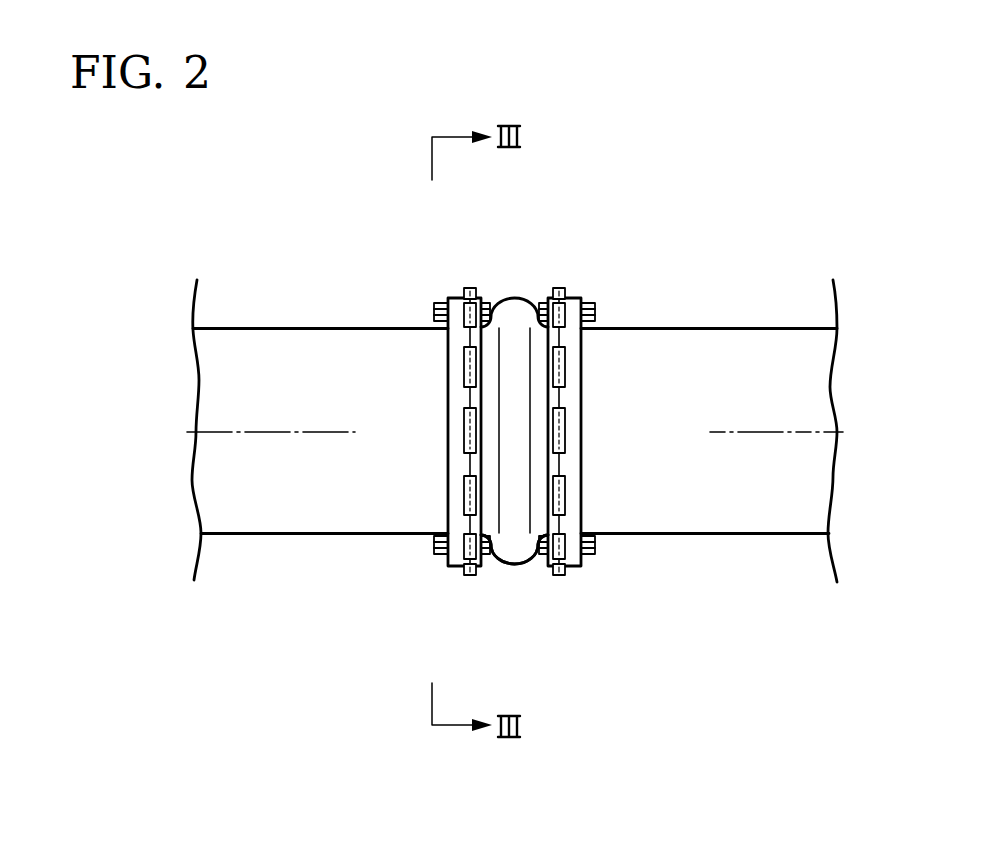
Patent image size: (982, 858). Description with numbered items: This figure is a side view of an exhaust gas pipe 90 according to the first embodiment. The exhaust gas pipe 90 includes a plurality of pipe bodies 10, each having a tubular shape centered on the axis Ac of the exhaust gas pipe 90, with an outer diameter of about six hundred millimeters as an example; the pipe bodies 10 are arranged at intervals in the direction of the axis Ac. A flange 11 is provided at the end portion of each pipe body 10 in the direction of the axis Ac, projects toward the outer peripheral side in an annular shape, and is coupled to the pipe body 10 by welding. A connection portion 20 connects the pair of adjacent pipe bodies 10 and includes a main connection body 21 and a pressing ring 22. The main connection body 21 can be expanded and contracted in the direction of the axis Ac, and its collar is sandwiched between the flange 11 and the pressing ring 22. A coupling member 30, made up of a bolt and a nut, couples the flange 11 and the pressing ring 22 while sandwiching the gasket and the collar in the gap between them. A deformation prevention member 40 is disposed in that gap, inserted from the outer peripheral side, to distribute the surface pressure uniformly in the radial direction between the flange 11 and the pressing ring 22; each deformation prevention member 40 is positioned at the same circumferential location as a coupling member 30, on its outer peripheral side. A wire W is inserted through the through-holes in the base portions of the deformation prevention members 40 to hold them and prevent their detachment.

The exhaust gas pipe 90 is at (152, 268).
The pipe body 10 is at (283, 347).
The flange 11 is at (455, 296).
The connection portion 20 is at (528, 278).
The main connection body 21 is at (517, 553).
The pressing ring 22 is at (490, 567).
The coupling member 30 is at (434, 553).
The deformation prevention member 40 is at (465, 432).
The wire W is at (465, 391).
The axis Ac is at (218, 433).